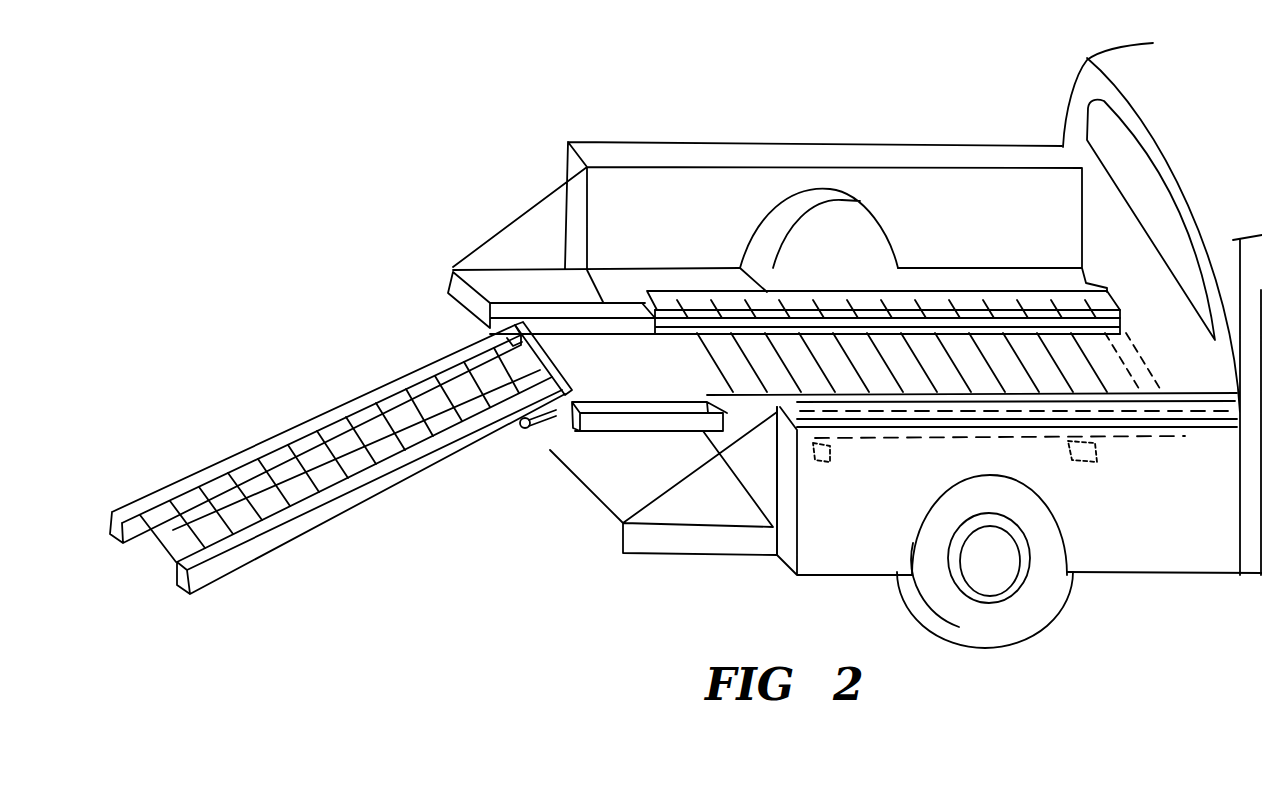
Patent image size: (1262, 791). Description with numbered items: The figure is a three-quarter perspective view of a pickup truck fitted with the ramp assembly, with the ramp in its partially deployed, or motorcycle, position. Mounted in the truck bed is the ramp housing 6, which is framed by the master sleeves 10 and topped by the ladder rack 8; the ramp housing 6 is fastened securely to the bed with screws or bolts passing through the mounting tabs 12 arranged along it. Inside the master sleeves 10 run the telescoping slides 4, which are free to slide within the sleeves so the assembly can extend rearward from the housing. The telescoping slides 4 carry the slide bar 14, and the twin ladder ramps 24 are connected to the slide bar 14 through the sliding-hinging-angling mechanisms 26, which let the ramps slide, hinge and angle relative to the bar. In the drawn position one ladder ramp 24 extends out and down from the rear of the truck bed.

The ramp rack frame 4 is at (539, 278).
The rail assembly 6 is at (833, 282).
The base rail 8 is at (1010, 327).
The channel rail 10 is at (693, 302).
The mounting bracket 12 is at (830, 457).
The hinge plate 14 is at (557, 362).
The ramp 24 is at (337, 466).
The hinge 26 is at (517, 342).